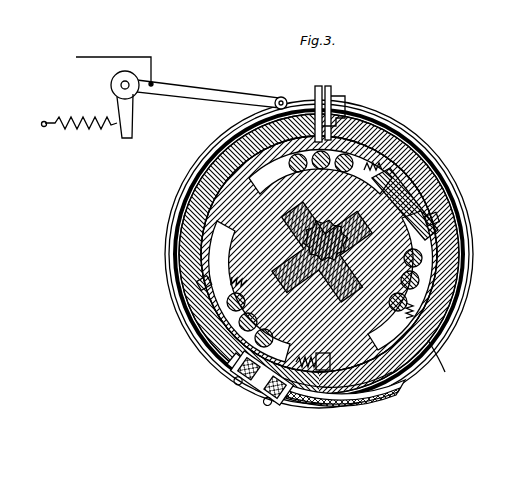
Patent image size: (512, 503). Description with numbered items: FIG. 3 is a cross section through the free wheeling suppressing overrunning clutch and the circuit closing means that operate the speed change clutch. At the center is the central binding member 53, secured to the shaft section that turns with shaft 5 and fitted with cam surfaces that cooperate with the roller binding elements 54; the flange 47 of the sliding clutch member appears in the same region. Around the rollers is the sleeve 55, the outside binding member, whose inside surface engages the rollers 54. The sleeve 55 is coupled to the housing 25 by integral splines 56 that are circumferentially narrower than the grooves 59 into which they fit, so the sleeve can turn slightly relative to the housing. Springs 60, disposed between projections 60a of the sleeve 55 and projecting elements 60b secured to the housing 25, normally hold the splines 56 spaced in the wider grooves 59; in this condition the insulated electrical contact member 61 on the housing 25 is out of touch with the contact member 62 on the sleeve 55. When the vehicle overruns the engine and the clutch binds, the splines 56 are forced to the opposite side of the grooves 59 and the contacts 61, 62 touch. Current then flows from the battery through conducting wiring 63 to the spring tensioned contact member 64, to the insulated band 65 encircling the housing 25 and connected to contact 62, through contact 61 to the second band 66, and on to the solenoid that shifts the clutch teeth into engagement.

The shaft 5 is at (285, 238).
The housing 25 is at (440, 335).
The flange 47 is at (365, 250).
The central binding member 53 is at (398, 150).
The roller binding elements 54 is at (406, 300).
The sleeve 55 is at (412, 190).
The splines 56 is at (212, 305).
The grooves 59 is at (438, 218).
The springs 60 is at (305, 375).
The projections 60a is at (330, 356).
The projecting elements 60b is at (272, 398).
The insulated electrical contact member 61 is at (330, 85).
The contact member 62 is at (316, 110).
The conducting wiring 63 is at (92, 56).
The spring tensioned contact member 64 is at (187, 90).
The insulated rail or band 65 is at (222, 145).
The band or rail 66 is at (384, 120).